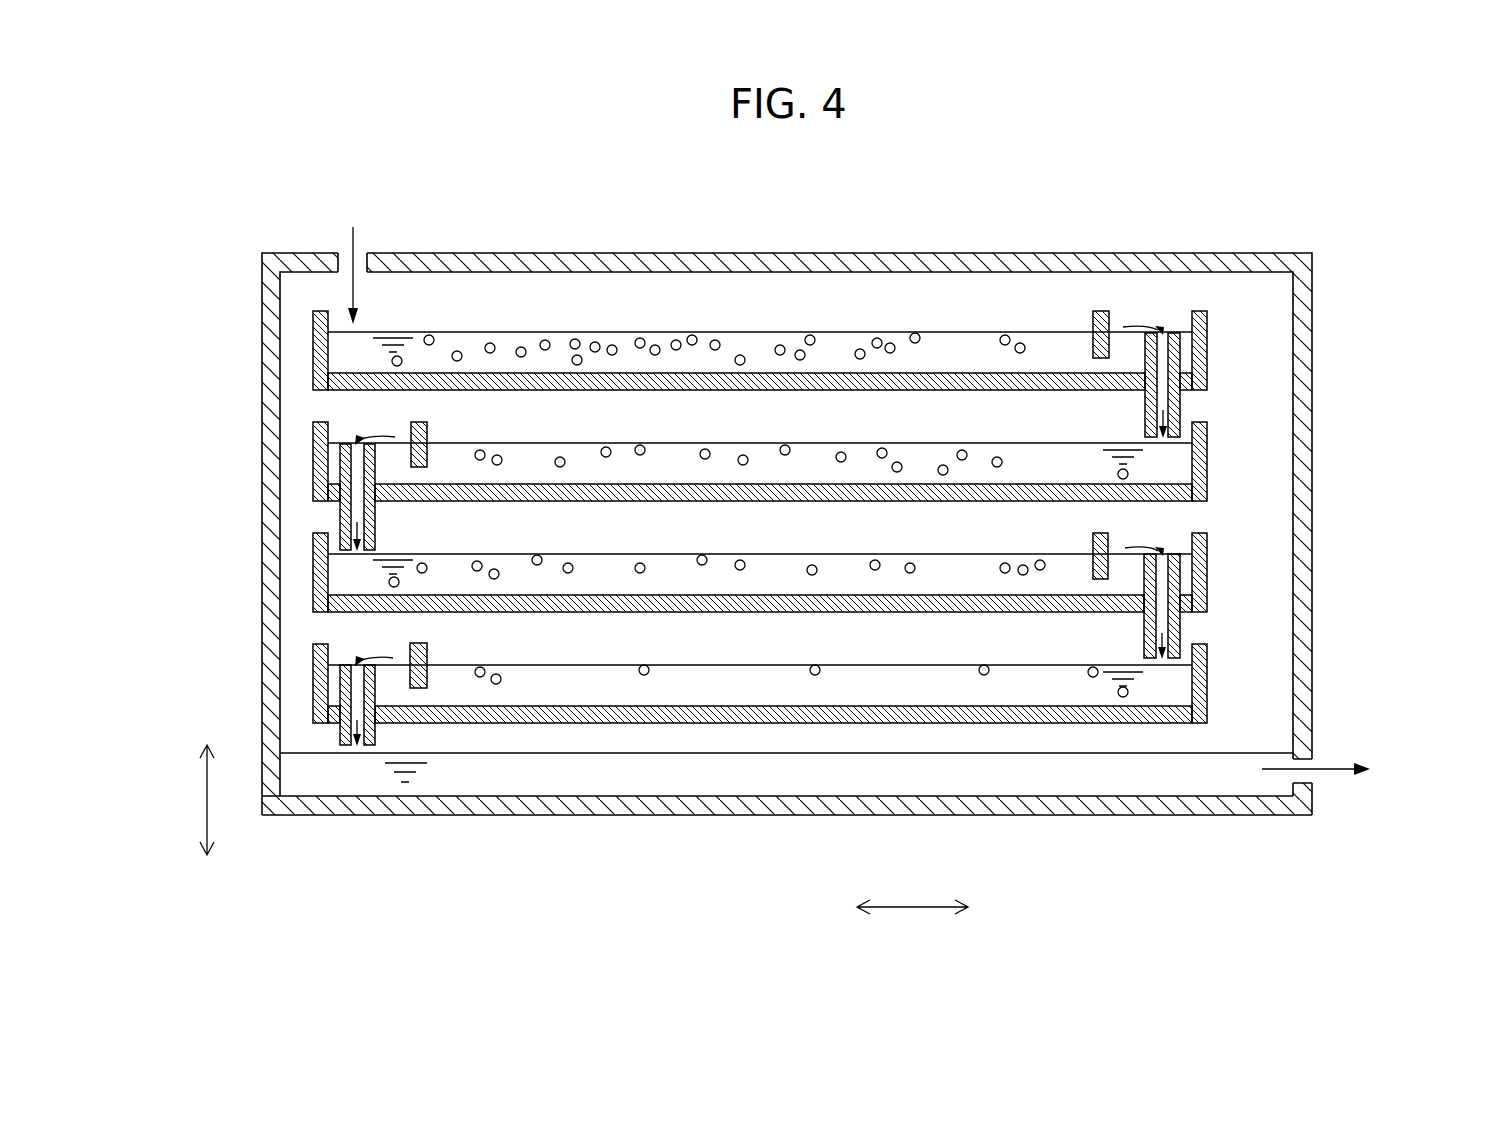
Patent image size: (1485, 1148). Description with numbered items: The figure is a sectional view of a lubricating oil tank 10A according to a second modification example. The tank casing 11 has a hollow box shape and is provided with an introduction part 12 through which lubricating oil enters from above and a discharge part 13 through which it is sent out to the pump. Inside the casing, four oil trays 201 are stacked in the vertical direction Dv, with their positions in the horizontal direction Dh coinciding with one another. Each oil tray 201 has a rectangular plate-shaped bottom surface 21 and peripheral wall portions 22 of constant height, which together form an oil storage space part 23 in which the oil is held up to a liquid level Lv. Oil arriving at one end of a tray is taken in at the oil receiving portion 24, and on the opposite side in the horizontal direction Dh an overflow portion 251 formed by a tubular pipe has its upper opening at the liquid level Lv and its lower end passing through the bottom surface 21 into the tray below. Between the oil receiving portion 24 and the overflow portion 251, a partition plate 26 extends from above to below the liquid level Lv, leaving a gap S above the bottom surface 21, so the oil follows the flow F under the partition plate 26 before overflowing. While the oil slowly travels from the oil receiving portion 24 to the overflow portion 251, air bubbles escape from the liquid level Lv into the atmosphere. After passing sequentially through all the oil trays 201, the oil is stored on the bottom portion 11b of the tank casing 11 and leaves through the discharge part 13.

The lubricating oil tank 10A is at (788, 512).
The tank casing 11 is at (788, 526).
The bottom portion of the tank casing 11b is at (722, 777).
The introduction part 12 is at (356, 262).
The discharge part 13 is at (1313, 773).
The oil tray 201 is at (783, 472).
The bottom surface 21 is at (722, 378).
The peripheral wall portion 22 is at (312, 327).
The oil storage space part 23 is at (760, 272).
The oil receiving portion 24 is at (771, 461).
The overflow portion 251 is at (1180, 352).
The partition plate 26 is at (423, 422).
The gap S is at (420, 476).
The flow of lubricating oil F is at (1212, 401).
The liquid level Lv is at (986, 333).
The vertical direction Dv is at (189, 800).
The horizontal direction Dh is at (912, 891).